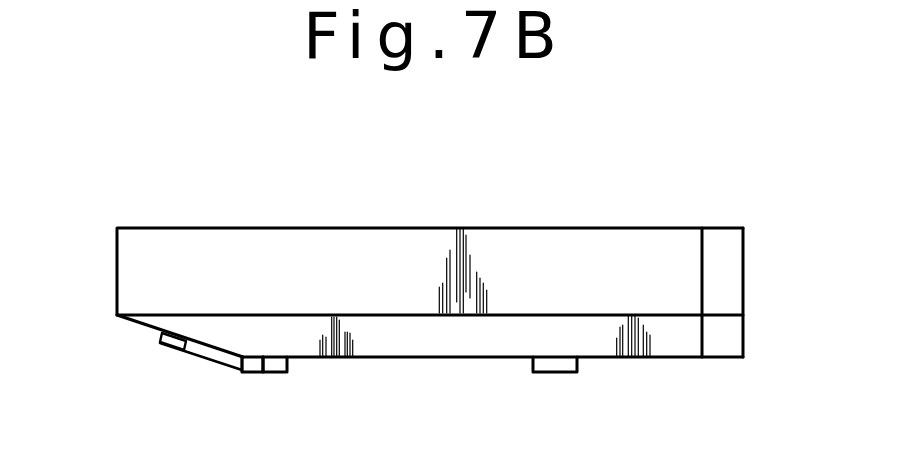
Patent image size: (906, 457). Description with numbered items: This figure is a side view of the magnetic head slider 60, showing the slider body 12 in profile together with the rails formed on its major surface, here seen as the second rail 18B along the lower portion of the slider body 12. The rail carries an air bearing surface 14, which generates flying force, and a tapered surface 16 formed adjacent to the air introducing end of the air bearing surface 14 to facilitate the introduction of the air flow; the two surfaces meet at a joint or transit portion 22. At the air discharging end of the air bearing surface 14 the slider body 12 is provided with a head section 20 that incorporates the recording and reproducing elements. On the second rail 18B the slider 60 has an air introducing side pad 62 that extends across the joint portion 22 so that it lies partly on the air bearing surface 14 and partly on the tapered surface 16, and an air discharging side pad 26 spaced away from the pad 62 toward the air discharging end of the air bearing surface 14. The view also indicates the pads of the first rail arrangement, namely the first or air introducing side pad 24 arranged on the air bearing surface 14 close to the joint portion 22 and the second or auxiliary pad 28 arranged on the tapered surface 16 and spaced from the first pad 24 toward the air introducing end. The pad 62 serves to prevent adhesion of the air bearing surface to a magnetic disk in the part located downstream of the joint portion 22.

The slider body 12 is at (322, 228).
The air bearing surface 14 is at (405, 358).
The tapered surface 16 is at (153, 331).
The second rail 18B is at (487, 345).
The head section 20 is at (730, 268).
The joint portion 22 is at (242, 372).
The first pad 24 is at (274, 366).
The air discharging side pad 26 is at (562, 371).
The second pad 28 is at (172, 348).
The magnetic head slider 60 is at (498, 207).
The air introducing side pad 62 is at (205, 359).